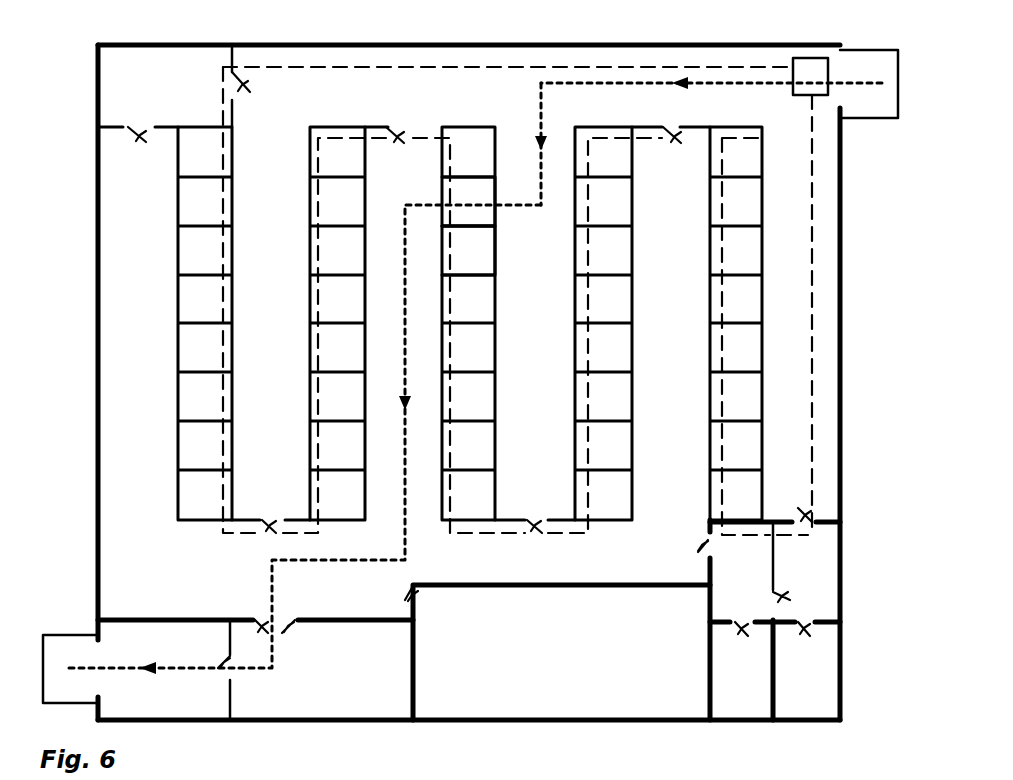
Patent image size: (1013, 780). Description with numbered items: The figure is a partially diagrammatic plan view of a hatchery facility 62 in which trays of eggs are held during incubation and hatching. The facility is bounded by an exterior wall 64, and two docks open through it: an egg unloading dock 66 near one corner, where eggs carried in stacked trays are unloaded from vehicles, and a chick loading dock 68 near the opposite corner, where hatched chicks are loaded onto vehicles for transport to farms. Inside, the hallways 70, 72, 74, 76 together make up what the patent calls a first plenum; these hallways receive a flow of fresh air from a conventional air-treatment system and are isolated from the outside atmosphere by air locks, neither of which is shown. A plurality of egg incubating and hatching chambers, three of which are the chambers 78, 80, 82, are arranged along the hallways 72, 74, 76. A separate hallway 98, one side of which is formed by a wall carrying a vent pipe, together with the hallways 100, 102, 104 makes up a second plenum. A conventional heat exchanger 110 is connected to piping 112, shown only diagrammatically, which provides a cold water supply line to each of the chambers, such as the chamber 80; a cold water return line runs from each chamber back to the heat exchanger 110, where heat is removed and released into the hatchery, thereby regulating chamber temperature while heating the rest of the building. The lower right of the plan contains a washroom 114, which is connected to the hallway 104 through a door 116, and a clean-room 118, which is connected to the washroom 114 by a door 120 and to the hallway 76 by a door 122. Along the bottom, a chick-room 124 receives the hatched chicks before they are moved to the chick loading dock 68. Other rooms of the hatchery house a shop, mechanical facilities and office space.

The hatchery facility 62 is at (90, 321).
The exterior wall 64 is at (310, 45).
The egg unloading dock 66 is at (872, 70).
The chick loading dock 68 is at (62, 650).
The hallway 70 is at (383, 97).
The hallway 72 is at (262, 263).
The hallway 74 is at (554, 216).
The hallway 76 is at (785, 310).
The egg incubating and hatching chamber 78 is at (462, 140).
The egg incubating and hatching chamber 80 is at (482, 195).
The egg incubating and hatching chamber 82 is at (482, 252).
The hallway 98 is at (382, 210).
The hallway 100 is at (140, 371).
The hallway 102 is at (667, 368).
The hallway 104 is at (478, 551).
The heat exchanger 110 is at (808, 70).
The piping 112 is at (693, 76).
The washroom 114 is at (773, 598).
The door 116 is at (700, 540).
The clean-room 118 is at (813, 588).
The door 120 is at (742, 573).
The door 122 is at (817, 507).
The chick-room 124 is at (343, 675).